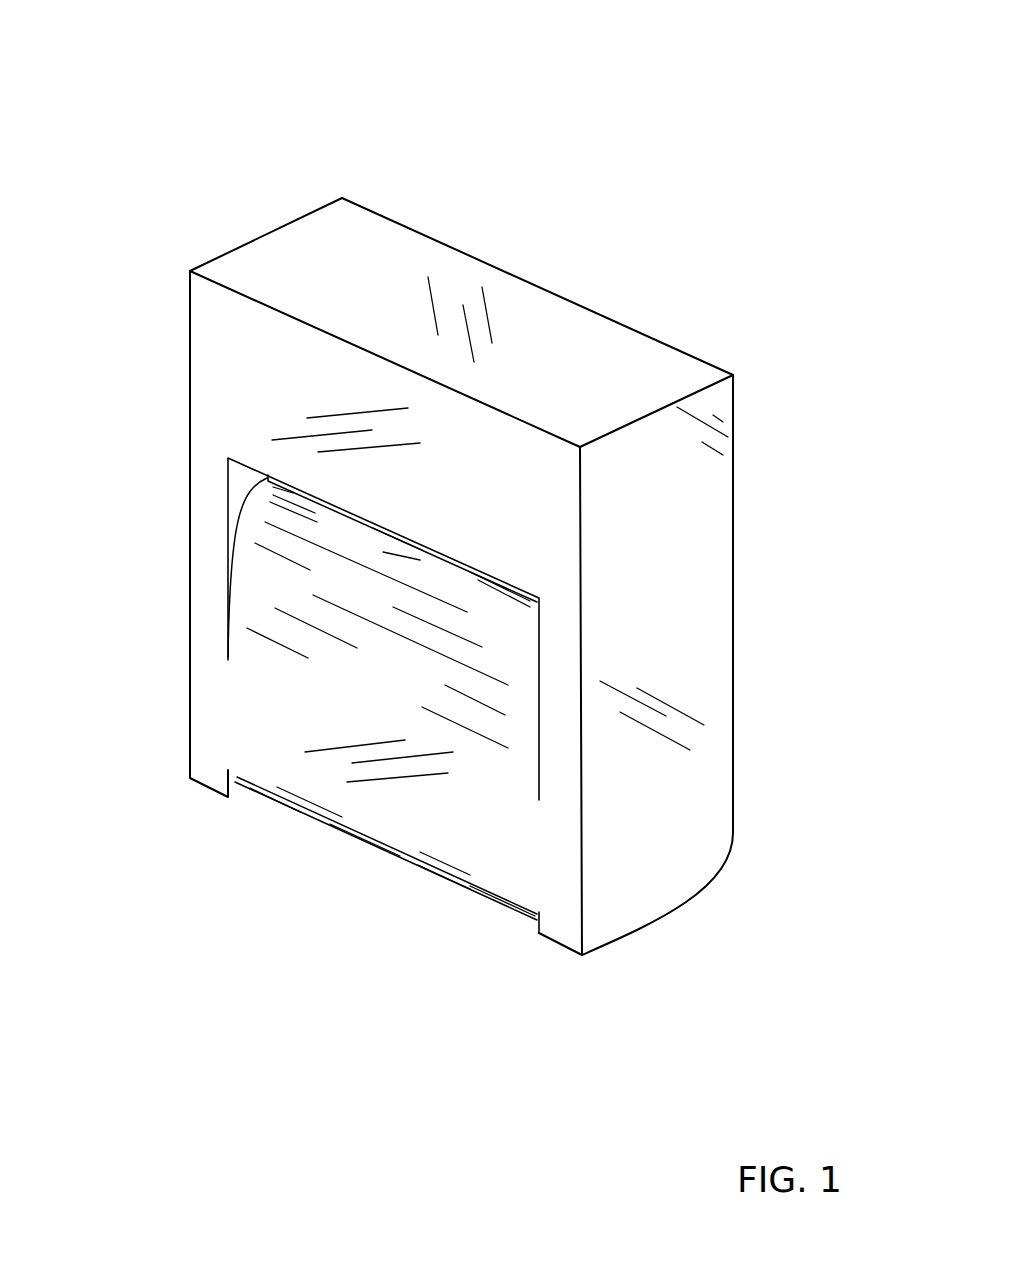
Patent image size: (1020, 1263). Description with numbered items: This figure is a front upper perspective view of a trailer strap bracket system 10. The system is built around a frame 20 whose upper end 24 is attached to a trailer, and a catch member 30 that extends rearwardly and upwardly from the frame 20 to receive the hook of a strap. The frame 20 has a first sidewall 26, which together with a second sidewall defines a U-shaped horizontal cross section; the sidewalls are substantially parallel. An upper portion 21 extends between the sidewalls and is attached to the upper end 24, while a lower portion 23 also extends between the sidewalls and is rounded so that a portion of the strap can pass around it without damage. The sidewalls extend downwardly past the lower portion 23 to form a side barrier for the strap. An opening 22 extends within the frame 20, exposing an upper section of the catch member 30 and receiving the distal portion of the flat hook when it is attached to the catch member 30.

The trailer strap bracket system 10 is at (742, 70).
The frame 20 is at (252, 224).
The upper portion 21 is at (212, 392).
The opening 22 is at (243, 497).
The lower portion 23 is at (450, 882).
The upper end 24 is at (418, 248).
The first sidewall 26 is at (710, 650).
The catch member 30 is at (260, 608).